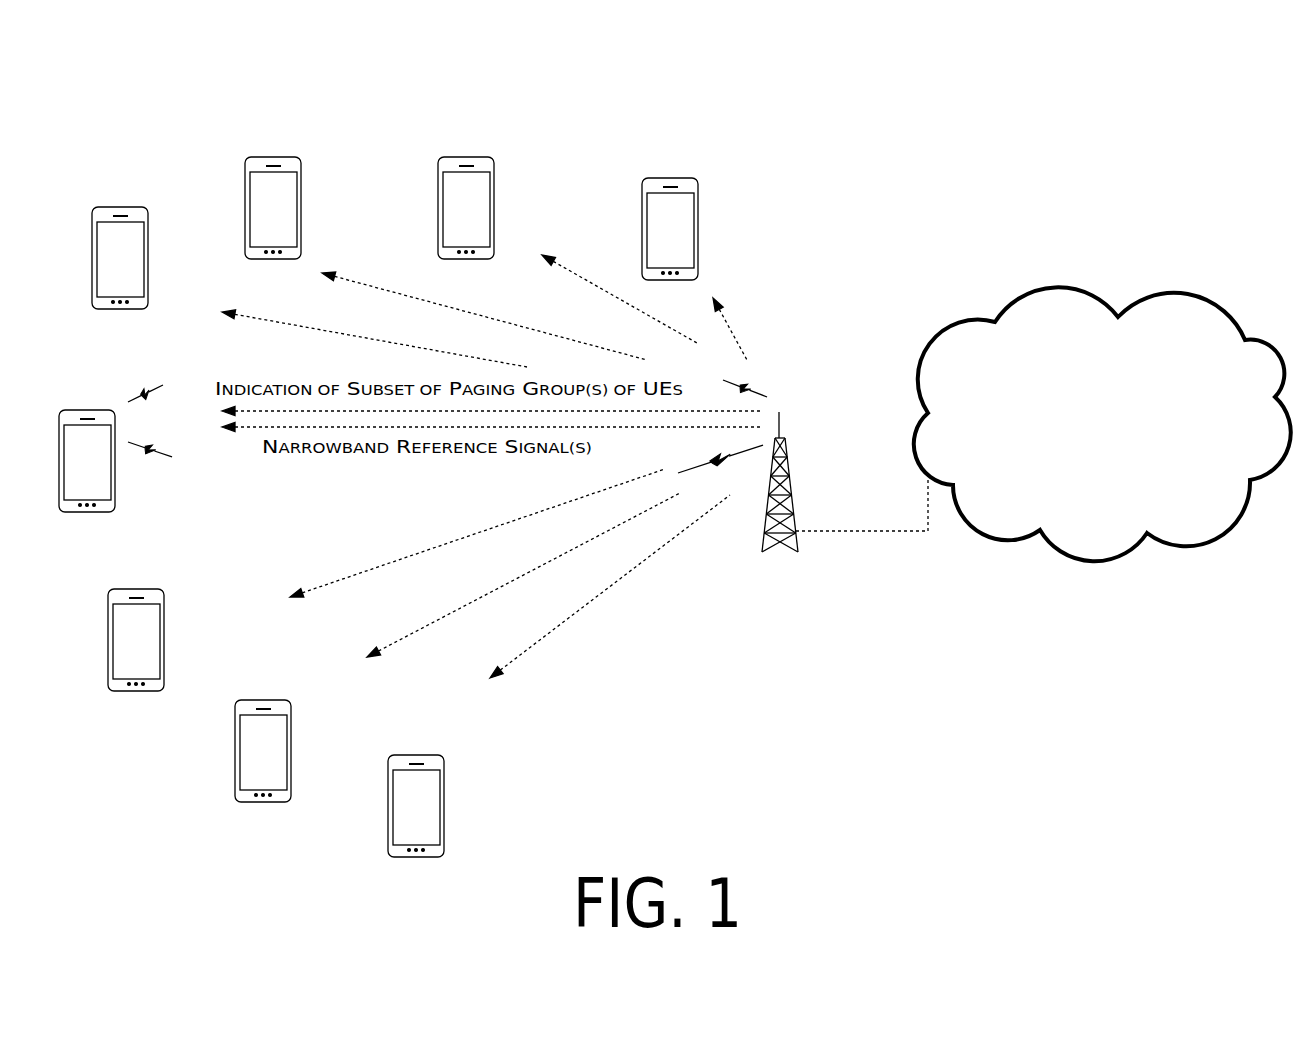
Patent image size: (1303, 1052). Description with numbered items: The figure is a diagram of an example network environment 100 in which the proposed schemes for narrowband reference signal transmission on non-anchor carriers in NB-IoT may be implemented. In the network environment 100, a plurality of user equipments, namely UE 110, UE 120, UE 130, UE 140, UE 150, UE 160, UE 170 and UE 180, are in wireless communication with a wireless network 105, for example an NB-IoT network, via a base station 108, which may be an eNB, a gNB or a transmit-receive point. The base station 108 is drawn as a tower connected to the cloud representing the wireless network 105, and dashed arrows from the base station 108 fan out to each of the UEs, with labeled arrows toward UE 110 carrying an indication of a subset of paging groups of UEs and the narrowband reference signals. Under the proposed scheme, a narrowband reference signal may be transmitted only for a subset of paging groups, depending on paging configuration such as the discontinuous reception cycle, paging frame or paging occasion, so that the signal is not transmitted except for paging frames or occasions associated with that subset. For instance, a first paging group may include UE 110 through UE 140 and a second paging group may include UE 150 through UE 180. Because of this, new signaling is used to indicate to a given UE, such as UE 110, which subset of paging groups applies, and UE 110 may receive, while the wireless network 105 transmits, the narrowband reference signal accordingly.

The network environment 100 is at (658, 47).
The wireless network 105 is at (1085, 447).
The base station 108 is at (790, 503).
The UE 110 is at (86, 410).
The UE 120 is at (137, 589).
The UE 130 is at (263, 700).
The UE 140 is at (415, 755).
The UE 150 is at (119, 207).
The UE 160 is at (272, 157).
The UE 170 is at (465, 157).
The UE 180 is at (669, 178).